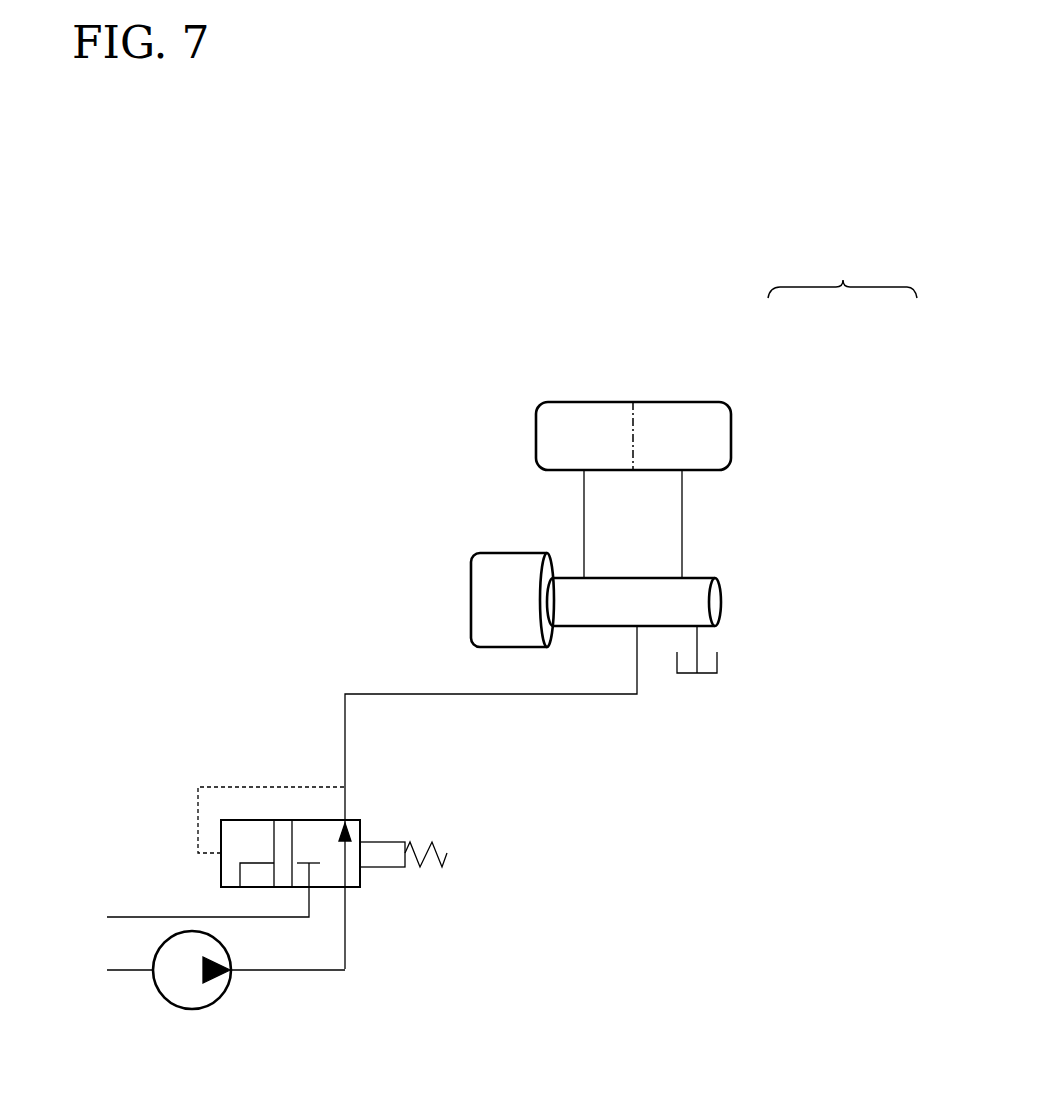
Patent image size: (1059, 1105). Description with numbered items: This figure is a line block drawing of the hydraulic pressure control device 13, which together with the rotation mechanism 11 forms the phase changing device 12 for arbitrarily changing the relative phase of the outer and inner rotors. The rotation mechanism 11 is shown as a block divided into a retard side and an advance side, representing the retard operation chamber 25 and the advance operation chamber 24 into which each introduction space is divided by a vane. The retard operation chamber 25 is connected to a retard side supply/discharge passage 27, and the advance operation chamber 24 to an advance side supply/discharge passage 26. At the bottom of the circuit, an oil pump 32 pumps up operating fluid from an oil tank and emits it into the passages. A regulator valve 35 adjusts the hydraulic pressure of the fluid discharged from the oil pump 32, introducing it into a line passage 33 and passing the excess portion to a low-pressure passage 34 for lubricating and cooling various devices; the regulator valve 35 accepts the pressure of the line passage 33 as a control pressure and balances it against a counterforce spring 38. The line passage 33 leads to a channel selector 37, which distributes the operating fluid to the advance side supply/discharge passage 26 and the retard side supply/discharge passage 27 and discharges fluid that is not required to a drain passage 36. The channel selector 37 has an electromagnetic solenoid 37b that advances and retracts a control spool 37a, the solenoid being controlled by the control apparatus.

The rotation mechanism 11 is at (724, 394).
The phase changing device 12 is at (842, 270).
The hydraulic pressure control device 13 is at (800, 543).
The advance operation chamber 24 is at (722, 448).
The retard operation chamber 25 is at (540, 437).
The advance side supply/discharge passage 26 is at (683, 543).
The retard side supply/discharge passage 27 is at (585, 543).
The oil pump 32 is at (228, 987).
The line passage 33 is at (485, 695).
The low-pressure passage 34 is at (140, 917).
The regulator valve 35 is at (366, 900).
The drain passage 36 is at (698, 638).
The channel selector 37 is at (605, 622).
The control spool 37a is at (593, 628).
The electromagnetic solenoid 37b is at (483, 617).
The counterforce spring 38 is at (447, 853).